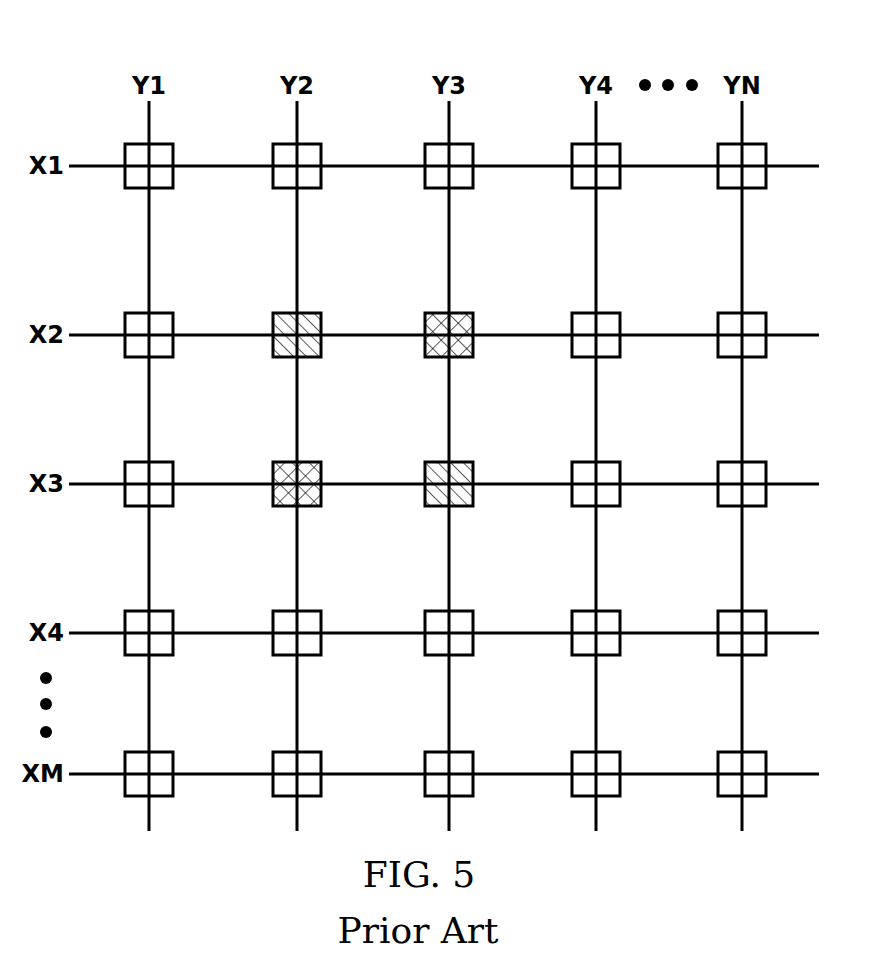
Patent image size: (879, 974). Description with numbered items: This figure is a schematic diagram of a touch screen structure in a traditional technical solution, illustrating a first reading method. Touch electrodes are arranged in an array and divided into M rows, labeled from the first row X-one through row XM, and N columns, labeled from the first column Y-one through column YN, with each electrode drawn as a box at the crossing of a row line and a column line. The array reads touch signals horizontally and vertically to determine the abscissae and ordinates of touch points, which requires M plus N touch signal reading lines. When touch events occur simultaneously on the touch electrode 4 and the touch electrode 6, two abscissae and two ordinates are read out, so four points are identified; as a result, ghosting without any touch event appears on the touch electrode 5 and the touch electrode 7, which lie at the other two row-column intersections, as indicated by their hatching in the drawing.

The touch electrode 4 is at (303, 312).
The touch electrode 5 is at (457, 312).
The touch electrode 6 is at (457, 460).
The touch electrode 7 is at (303, 460).